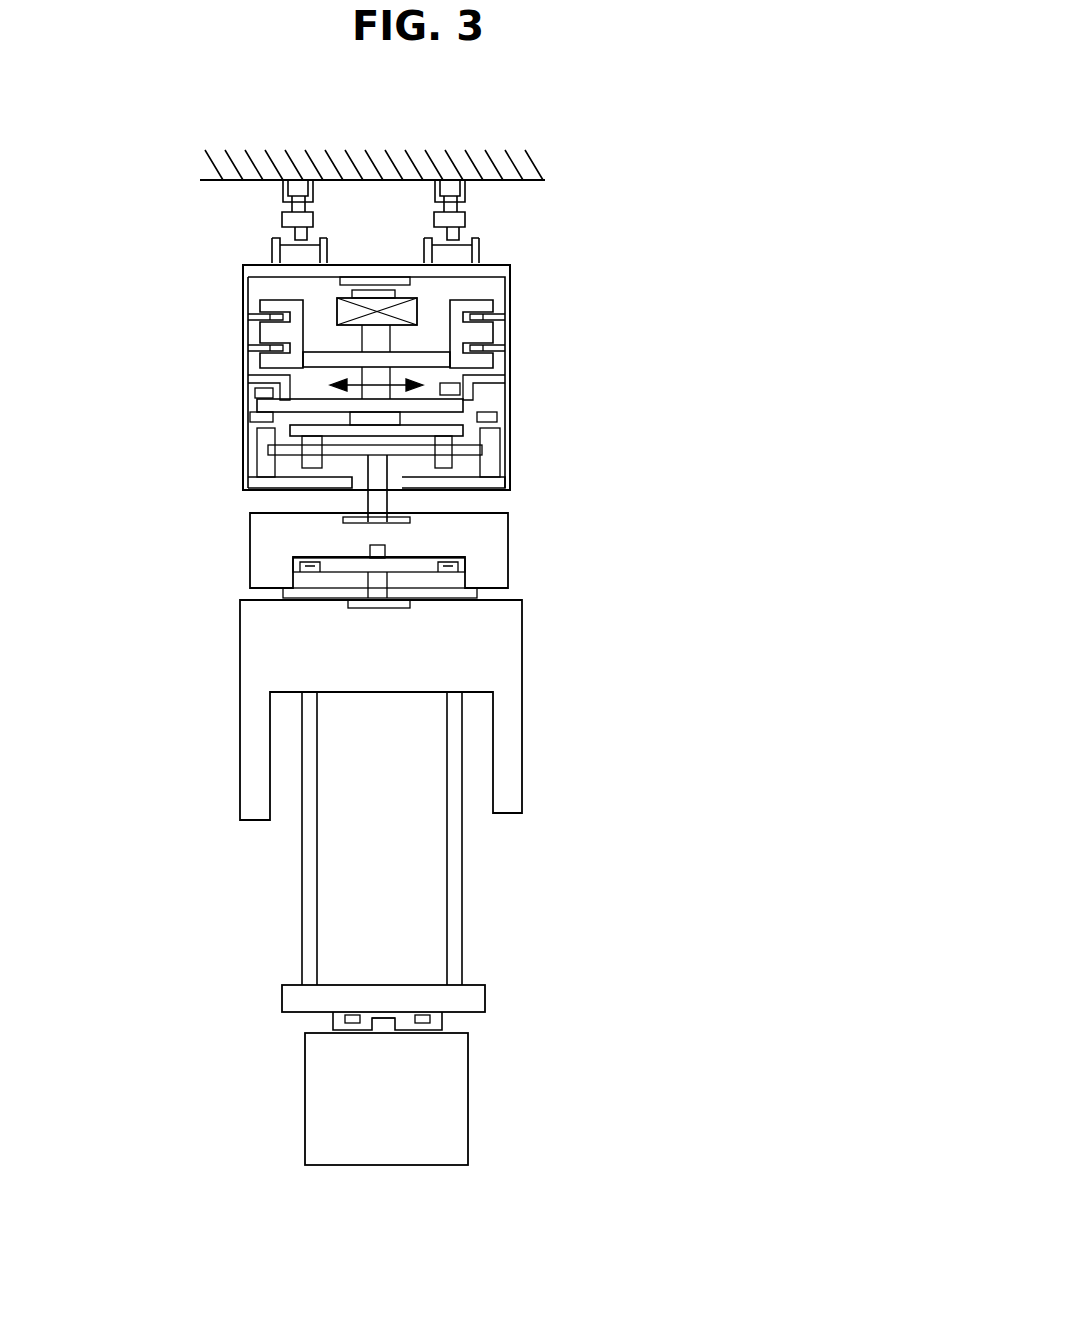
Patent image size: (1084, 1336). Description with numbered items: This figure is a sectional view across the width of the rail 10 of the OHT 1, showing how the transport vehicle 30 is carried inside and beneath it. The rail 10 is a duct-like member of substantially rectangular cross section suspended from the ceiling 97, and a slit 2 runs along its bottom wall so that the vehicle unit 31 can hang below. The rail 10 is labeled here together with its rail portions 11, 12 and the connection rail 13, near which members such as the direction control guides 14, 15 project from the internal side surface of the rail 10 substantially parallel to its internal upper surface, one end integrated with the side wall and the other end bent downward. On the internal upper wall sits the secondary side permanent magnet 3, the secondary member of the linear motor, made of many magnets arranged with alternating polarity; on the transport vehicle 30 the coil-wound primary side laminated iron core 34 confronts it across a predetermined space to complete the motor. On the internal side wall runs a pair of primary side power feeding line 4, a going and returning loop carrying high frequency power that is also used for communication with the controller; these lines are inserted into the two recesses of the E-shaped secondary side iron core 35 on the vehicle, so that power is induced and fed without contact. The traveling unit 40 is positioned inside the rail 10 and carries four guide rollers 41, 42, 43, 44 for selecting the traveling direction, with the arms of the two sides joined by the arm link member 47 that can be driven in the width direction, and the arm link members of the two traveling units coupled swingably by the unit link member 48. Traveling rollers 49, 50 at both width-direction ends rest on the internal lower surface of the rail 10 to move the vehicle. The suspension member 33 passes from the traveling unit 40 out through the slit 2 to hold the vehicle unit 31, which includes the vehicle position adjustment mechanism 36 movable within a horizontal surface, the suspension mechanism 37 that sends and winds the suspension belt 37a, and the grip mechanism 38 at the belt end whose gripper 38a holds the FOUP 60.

The OHT 1 is at (882, 230).
The slit 2 is at (412, 523).
The secondary side permanent magnet 3 is at (412, 288).
The primary side power feeding line 4 is at (486, 353).
The rail 10 is at (542, 265).
The acceleration sensor 11 is at (542, 265).
The acceleration sensor 12 is at (542, 265).
The connection rail 13 is at (500, 250).
The direction control guide 14 is at (462, 392).
The direction control guide 15 is at (258, 378).
The transport vehicle 30 is at (185, 622).
The vehicle unit 31 is at (726, 908).
The suspension member 33 is at (377, 494).
The primary side laminated iron core 34 is at (340, 303).
The secondary side iron core 35 is at (260, 317).
The vehicle position adjustment mechanism 36 is at (493, 567).
The suspension mechanism 37 is at (505, 658).
The suspension belt 37a is at (305, 863).
The grip mechanism 38 is at (478, 995).
The gripper 38a is at (325, 1020).
The traveling unit 40 is at (487, 425).
The guide roller 41 is at (456, 425).
The guide roller 42 is at (290, 407).
The guide roller 43 is at (466, 410).
The guide roller 44 is at (262, 398).
The arm link member 47 is at (353, 414).
The unit link member 48 is at (272, 442).
The traveling roller 49 is at (485, 462).
The traveling roller 50 is at (252, 466).
The FOUP 60 is at (452, 1098).
The ceiling 97 is at (535, 158).